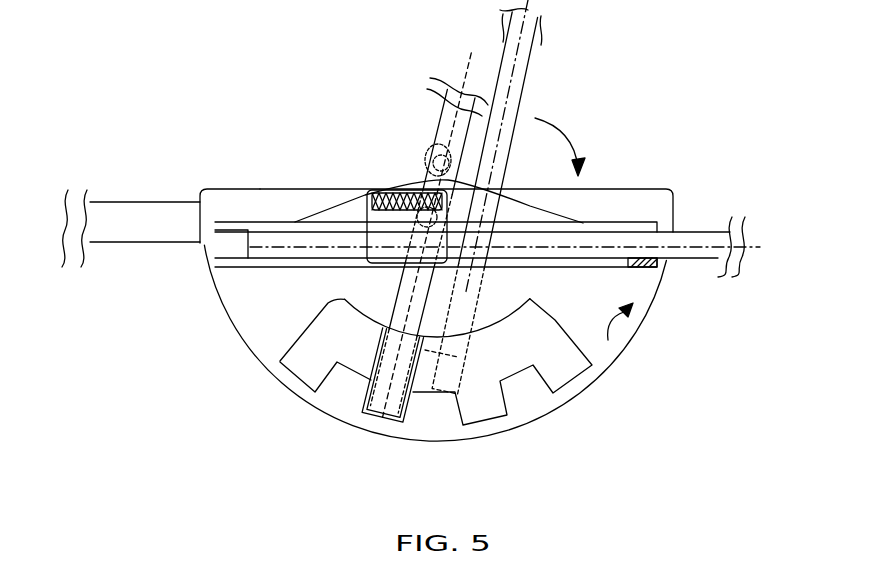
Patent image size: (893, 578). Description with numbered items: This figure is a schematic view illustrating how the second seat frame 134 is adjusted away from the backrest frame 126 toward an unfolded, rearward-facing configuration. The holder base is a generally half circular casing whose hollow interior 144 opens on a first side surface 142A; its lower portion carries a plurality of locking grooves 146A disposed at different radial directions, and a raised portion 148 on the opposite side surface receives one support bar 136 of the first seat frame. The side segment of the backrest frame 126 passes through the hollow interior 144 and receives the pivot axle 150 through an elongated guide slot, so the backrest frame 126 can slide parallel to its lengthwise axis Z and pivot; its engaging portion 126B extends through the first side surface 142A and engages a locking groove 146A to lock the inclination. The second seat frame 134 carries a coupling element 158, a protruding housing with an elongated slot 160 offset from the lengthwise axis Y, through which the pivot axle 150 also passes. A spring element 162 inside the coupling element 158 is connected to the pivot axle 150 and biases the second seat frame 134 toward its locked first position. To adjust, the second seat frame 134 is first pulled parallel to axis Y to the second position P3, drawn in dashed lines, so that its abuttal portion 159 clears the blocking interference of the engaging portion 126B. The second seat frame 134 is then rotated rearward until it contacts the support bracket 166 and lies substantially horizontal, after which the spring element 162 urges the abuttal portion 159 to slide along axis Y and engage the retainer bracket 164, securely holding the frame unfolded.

The support bar 136 is at (118, 213).
The retainer bracket 164 is at (218, 195).
The raised portion 148 is at (258, 197).
The elongated slot 160 is at (345, 205).
The coupling element 158 is at (365, 192).
The spring element 162 is at (396, 192).
The pivot axle 150 is at (425, 176).
The backrest frame 126 is at (447, 110).
The second seat frame 134 is at (524, 80).
The abuttal portion 159 is at (228, 250).
The support bracket 166 is at (663, 258).
The first side surface 142A is at (625, 345).
The hollow interior 144 is at (513, 340).
The locking groove 146A is at (362, 395).
The engaging portion 126B is at (375, 420).
The second position P3 is at (467, 387).
The lengthwise axis Y is at (530, 3).
The lengthwise axis Z is at (467, 62).